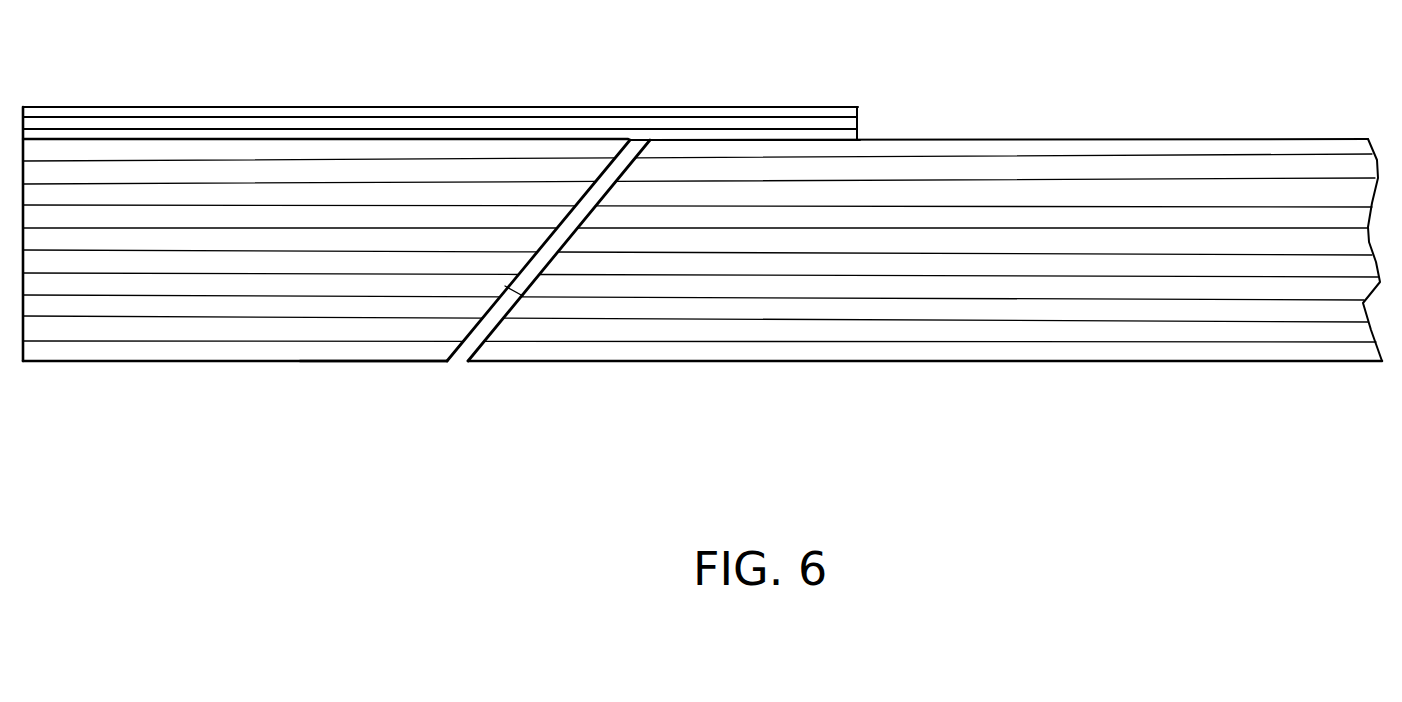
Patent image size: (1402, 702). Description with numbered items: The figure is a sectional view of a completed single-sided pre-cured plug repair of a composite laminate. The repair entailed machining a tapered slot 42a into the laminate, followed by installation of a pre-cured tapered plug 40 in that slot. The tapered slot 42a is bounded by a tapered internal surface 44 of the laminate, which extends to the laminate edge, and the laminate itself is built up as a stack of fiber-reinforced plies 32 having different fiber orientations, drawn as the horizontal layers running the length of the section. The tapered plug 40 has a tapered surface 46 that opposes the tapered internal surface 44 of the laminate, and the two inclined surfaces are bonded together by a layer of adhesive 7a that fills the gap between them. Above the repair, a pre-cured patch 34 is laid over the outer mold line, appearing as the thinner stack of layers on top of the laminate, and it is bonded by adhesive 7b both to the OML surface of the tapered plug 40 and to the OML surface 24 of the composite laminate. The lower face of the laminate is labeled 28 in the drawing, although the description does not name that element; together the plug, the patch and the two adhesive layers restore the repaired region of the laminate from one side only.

The OML surface 24 is at (1168, 140).
The lower surface of plate 28 is at (1192, 362).
The fiber-reinforced plies 32 is at (224, 123).
The pre-cured patch 34 is at (765, 105).
The adhesive 7a is at (627, 152).
The adhesive 7b is at (858, 133).
The tapered internal surface 44 is at (620, 172).
The tapered slot 42a is at (500, 328).
The tapered surface 46 is at (518, 285).
The tapered plug 40 is at (362, 363).